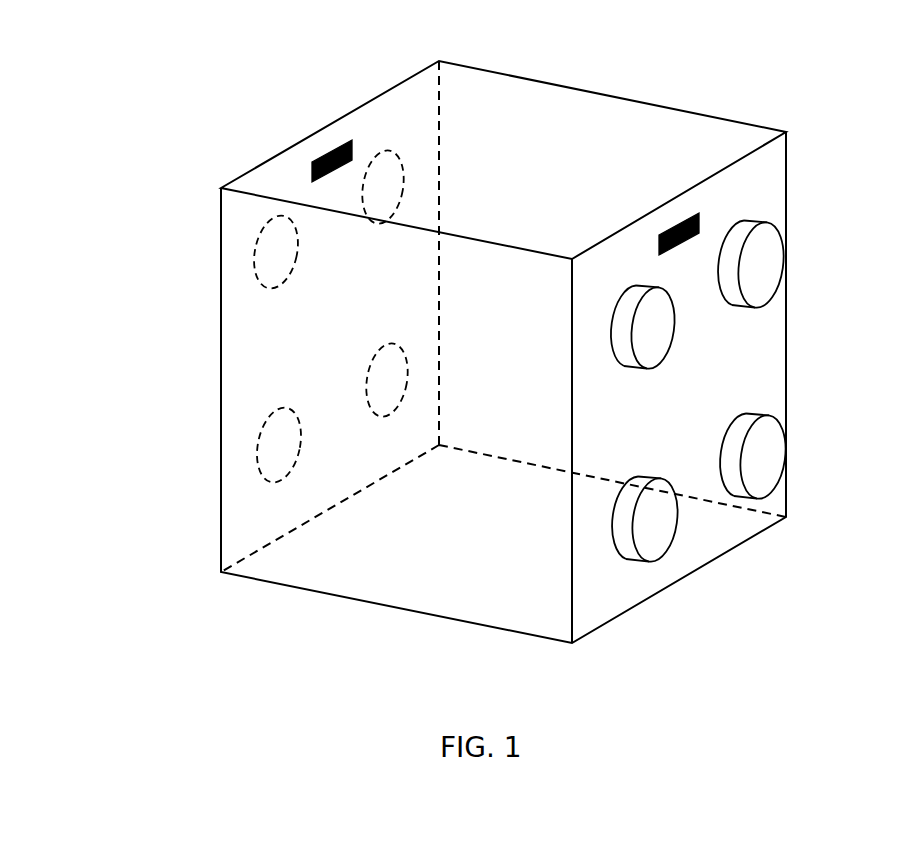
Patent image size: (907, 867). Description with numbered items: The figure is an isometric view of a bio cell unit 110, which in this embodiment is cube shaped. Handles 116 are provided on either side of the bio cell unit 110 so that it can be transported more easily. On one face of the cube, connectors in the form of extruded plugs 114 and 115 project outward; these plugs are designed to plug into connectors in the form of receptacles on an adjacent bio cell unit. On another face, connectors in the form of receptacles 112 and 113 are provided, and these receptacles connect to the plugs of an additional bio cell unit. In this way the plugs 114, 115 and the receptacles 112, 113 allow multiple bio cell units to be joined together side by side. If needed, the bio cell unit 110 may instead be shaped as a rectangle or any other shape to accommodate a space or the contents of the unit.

The bio cell unit 110 is at (685, 130).
The receptacle 112 is at (256, 255).
The receptacle 113 is at (259, 455).
The extruded plug 114 is at (773, 298).
The extruded plug 115 is at (777, 482).
The handle 116 is at (337, 148).